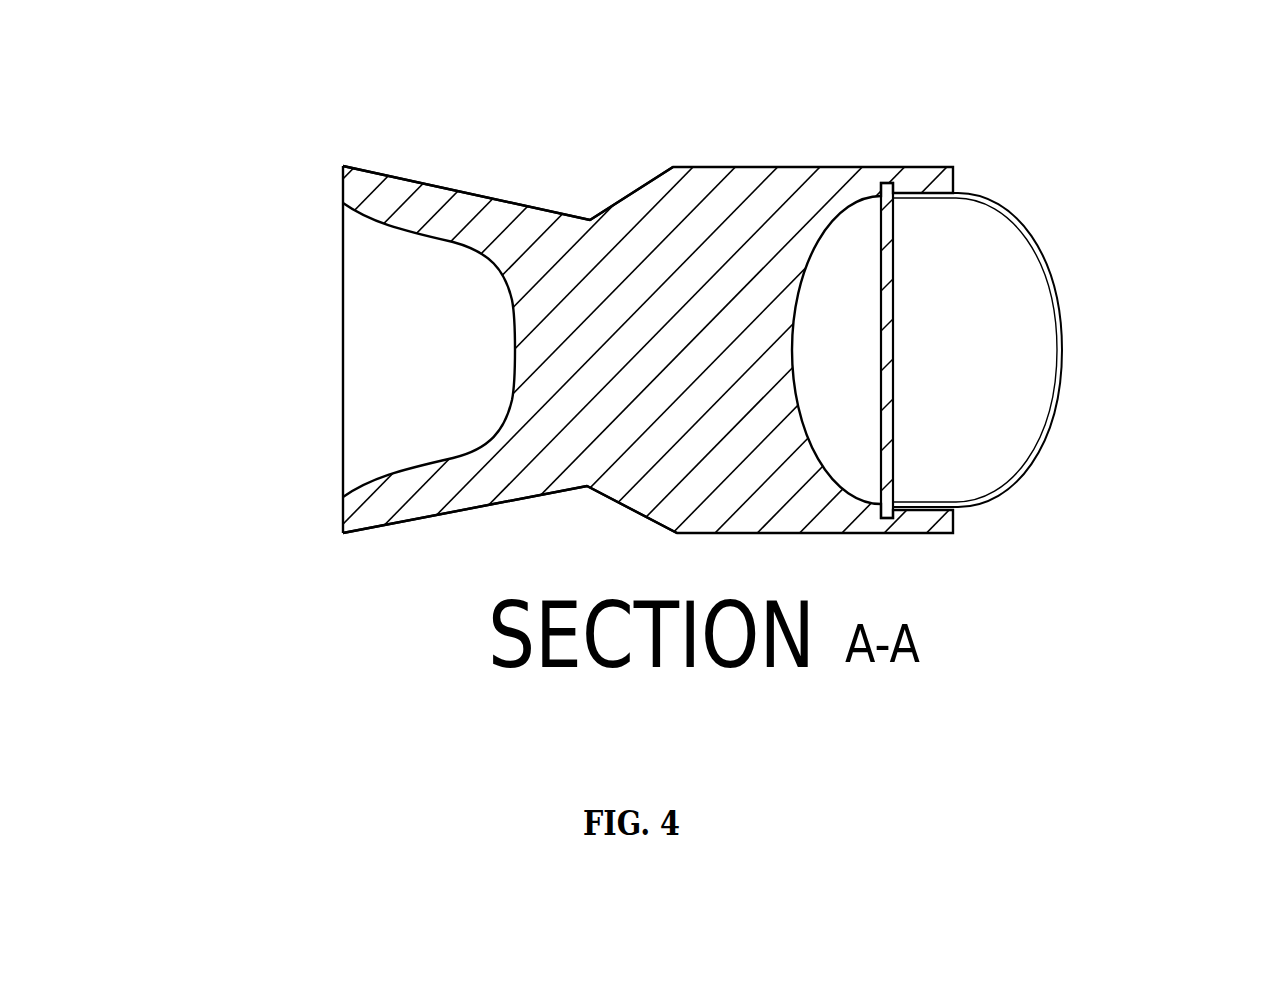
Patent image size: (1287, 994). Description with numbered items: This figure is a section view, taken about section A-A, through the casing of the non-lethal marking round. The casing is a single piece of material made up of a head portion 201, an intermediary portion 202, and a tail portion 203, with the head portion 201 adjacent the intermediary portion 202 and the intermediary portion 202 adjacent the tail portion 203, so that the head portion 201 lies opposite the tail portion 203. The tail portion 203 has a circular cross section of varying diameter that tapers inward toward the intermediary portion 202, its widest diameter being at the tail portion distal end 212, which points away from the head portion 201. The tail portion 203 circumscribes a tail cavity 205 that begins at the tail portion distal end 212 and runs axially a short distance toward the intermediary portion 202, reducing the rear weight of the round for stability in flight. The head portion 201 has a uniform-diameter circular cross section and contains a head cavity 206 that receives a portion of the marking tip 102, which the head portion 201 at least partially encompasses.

The head portion 201 is at (783, 182).
The intermediary portion 202 is at (630, 195).
The tail portion 203 is at (378, 512).
The tail cavity 205 is at (366, 357).
The head cavity 206 is at (903, 268).
The tail portion distal end 212 is at (330, 279).
The marking tip 102 is at (1066, 385).